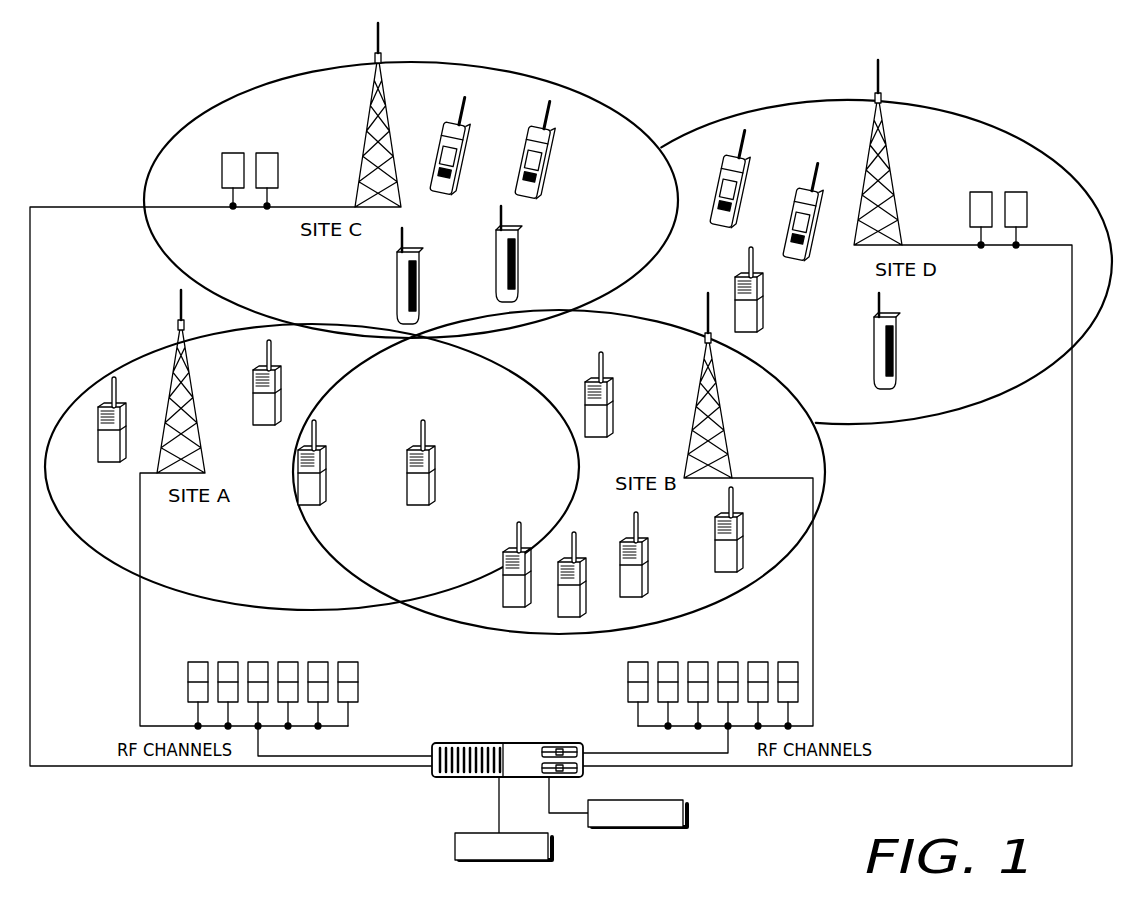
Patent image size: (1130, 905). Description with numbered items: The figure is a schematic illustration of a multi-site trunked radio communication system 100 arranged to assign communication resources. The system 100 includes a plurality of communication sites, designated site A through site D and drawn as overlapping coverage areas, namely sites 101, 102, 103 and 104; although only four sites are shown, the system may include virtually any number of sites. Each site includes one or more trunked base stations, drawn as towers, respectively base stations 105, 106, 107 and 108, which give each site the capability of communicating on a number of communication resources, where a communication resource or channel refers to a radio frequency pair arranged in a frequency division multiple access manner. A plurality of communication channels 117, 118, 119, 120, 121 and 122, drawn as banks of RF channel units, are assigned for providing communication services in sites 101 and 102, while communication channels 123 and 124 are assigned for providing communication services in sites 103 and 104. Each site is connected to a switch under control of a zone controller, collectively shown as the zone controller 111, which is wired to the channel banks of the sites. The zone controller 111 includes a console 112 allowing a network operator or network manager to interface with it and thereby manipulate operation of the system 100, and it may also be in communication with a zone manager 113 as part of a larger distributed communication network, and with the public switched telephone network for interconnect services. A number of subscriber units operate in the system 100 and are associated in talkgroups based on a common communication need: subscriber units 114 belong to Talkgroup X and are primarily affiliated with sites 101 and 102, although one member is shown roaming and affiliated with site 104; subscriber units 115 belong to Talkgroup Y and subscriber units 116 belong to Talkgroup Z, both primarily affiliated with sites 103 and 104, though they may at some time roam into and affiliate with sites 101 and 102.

The multi-site trunked radio communication system 100 is at (1085, 829).
The communication site A 101 is at (133, 361).
The communication site B 102 is at (826, 471).
The communication site C 103 is at (237, 101).
The communication site D 104 is at (1040, 162).
The trunked base station 105 is at (186, 392).
The trunked base station 106 is at (725, 410).
The trunked base station 107 is at (372, 110).
The trunked base station 108 is at (893, 148).
The zone controller 111 is at (510, 743).
The console 112 is at (683, 810).
The zone manager 113 is at (455, 845).
The subscriber unit 114 is at (113, 457).
The subscriber unit 115 is at (444, 128).
The subscriber unit 116 is at (521, 264).
The communication channel 117 is at (198, 660).
The communication channel 118 is at (228, 660).
The communication channel 119 is at (258, 660).
The communication channel 120 is at (288, 660).
The communication channel 121 is at (318, 660).
The communication channel 122 is at (358, 668).
The communication channel 123 is at (222, 176).
The communication channel 124 is at (268, 153).